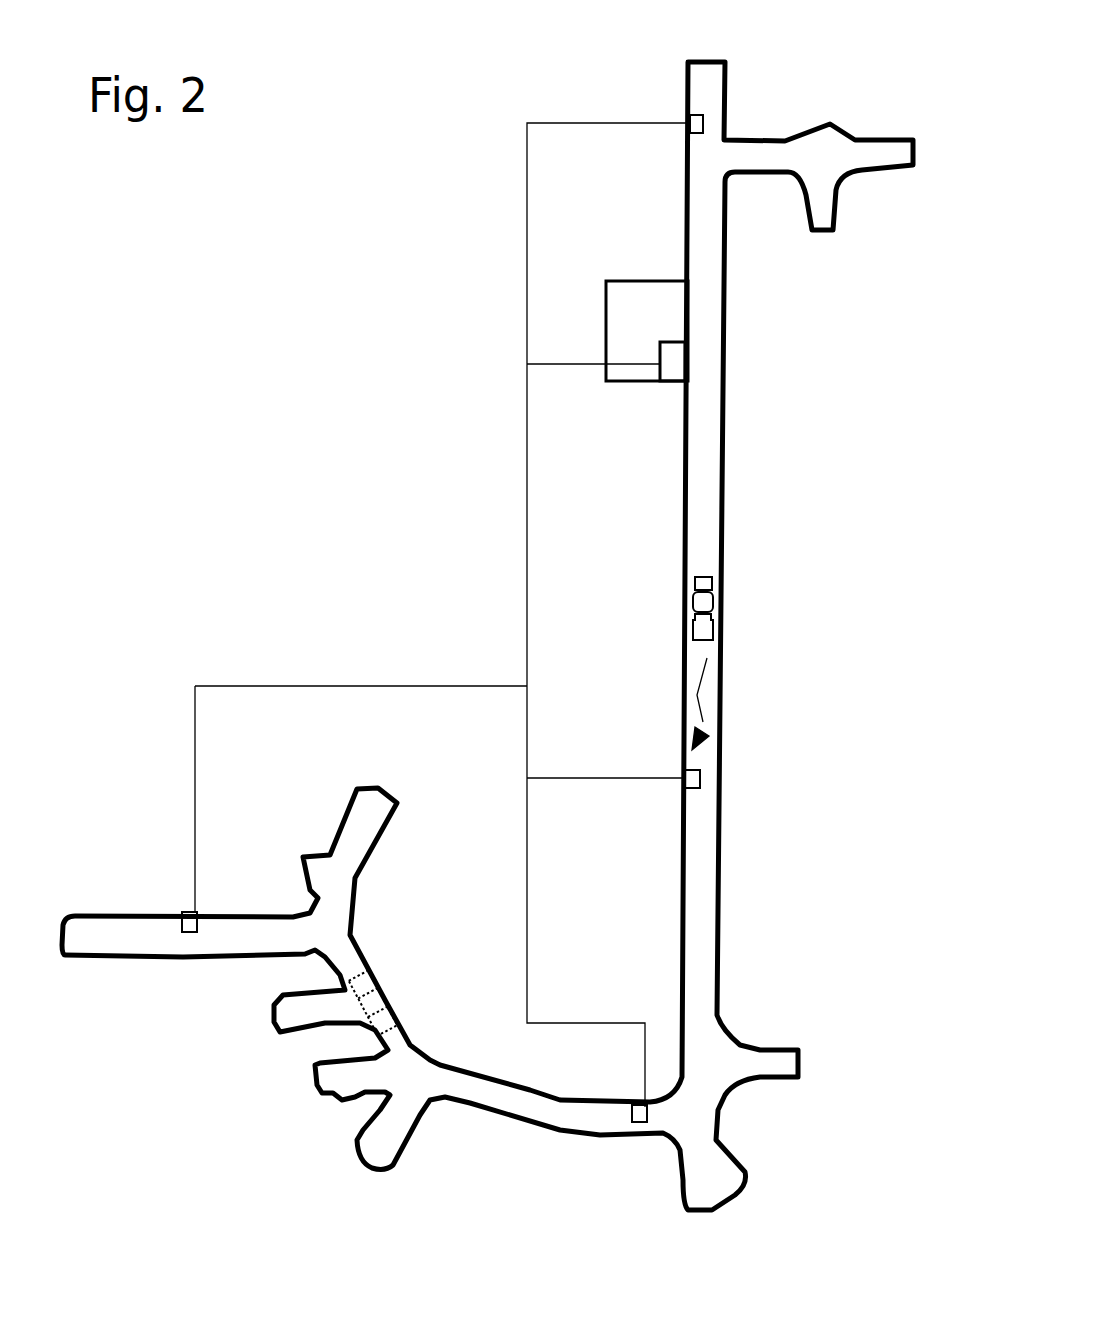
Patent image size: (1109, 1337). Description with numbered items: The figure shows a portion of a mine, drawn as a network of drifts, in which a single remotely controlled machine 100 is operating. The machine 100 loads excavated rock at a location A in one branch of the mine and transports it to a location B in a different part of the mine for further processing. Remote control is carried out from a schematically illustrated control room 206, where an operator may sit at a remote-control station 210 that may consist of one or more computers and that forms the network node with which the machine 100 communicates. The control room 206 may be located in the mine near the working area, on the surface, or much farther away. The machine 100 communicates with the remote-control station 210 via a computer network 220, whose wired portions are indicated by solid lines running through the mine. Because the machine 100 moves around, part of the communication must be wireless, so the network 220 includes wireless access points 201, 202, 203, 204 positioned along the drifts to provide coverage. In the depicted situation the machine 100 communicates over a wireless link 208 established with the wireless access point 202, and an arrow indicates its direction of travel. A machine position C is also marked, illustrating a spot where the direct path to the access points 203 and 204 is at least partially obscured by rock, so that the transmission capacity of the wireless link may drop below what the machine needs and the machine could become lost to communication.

The machine 100 is at (712, 580).
The wireless access point 201 is at (690, 113).
The wireless access point 202 is at (685, 772).
The wireless access point 203 is at (640, 1120).
The wireless access point 204 is at (180, 912).
The control room 206 is at (627, 329).
The wireless link 208 is at (700, 692).
The remote-control station 210 is at (672, 355).
The computer network 220 is at (527, 493).
The location A is at (145, 930).
The location B is at (845, 158).
The machine position C is at (383, 978).